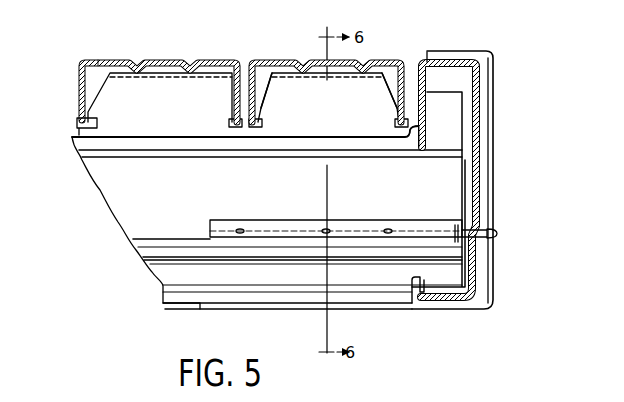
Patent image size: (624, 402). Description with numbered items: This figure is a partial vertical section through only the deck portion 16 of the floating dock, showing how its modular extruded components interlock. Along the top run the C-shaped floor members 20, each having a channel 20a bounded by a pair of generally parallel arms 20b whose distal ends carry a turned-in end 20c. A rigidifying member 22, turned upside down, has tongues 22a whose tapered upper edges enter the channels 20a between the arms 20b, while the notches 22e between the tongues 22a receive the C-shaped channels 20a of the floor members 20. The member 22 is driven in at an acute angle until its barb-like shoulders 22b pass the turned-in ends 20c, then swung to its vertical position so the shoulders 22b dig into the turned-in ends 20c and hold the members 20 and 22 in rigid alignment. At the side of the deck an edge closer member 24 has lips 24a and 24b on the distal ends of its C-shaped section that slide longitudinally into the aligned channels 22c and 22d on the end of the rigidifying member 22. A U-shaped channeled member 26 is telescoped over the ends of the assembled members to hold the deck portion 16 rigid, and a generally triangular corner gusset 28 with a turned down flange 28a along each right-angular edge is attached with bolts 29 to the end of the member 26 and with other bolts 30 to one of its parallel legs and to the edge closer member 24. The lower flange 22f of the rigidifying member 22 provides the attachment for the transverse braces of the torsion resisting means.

The deck portion 16 is at (490, 136).
The floor member 20 is at (270, 58).
The channel 20a is at (99, 72).
The arm 20b is at (78, 93).
The turned-in end 20c is at (92, 108).
The rigidifying member 22 is at (132, 198).
The tongue 22a is at (332, 128).
The shoulder 22b is at (264, 100).
The channel 22c is at (430, 142).
The channel 22d is at (418, 268).
The notch 22e is at (400, 137).
The lower flange 22f is at (198, 306).
The edge closer member 24 is at (481, 80).
The lip 24a is at (432, 97).
The lip 24b is at (414, 301).
The U-shaped channeled member 26 is at (494, 173).
The corner gusset 28 is at (256, 222).
The turned down flange 28a is at (522, 265).
The bolt 29 is at (329, 229).
The bolt 30 is at (498, 234).